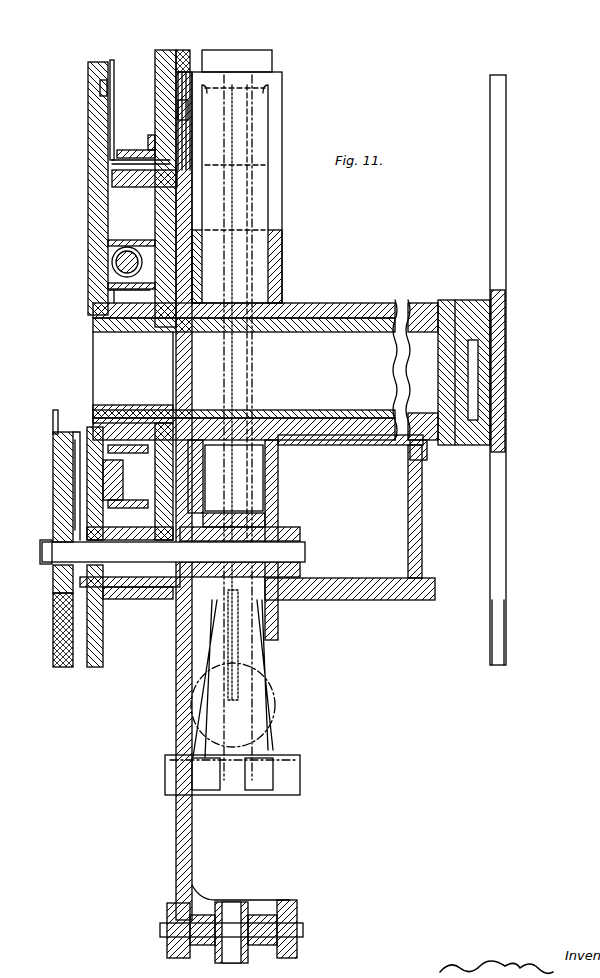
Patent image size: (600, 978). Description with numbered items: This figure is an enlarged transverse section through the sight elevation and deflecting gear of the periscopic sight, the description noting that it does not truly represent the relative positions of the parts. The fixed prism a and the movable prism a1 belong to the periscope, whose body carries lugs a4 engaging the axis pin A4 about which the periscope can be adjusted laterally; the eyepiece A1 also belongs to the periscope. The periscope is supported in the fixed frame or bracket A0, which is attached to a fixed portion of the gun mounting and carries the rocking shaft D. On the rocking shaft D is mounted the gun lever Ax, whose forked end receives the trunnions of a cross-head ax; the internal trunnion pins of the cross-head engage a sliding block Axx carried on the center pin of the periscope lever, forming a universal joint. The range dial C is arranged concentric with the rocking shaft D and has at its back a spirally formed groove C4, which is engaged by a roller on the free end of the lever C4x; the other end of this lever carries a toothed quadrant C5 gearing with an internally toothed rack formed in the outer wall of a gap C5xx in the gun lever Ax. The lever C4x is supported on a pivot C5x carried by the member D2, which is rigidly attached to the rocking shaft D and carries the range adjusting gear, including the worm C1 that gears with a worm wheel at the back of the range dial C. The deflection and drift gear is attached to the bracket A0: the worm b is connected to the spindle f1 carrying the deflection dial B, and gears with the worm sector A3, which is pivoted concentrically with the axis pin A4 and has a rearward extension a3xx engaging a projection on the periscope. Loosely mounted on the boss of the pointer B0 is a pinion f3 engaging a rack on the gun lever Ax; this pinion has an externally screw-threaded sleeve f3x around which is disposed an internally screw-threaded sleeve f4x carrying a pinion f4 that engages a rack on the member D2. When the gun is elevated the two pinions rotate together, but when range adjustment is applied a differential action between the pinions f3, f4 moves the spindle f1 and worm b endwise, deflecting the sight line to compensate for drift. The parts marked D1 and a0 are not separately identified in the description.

The fixed prism a is at (490, 125).
The movable prism a1 is at (492, 636).
The frame block D1 is at (472, 305).
The rocking shaft D is at (265, 380).
The range dial C is at (90, 140).
The lever C4x is at (110, 72).
The spirally formed groove C4 is at (100, 88).
The member D2 is at (165, 130).
The pivot C5x is at (95, 182).
The toothed quadrant C5 is at (183, 76).
The gap C5xx is at (186, 116).
The worm C1 is at (113, 261).
The gun lever Ax is at (186, 224).
The axis pin A4 is at (245, 62).
The lugs a4 is at (255, 132).
The bracket A0 is at (262, 305).
The housing cavity a0 is at (274, 490).
The worm b is at (250, 540).
The pointer B0 is at (55, 412).
The deflection dial B is at (62, 442).
The pinion f4 is at (146, 508).
The internally screw-threaded sleeve f4x is at (57, 596).
The externally screw-threaded sleeve f3x is at (127, 580).
The spindle f1 is at (150, 578).
The pinion f3 is at (170, 625).
The worm sector A3 is at (250, 650).
The eyepiece A1 is at (255, 722).
The rearward extension a3xx is at (290, 775).
The sliding block Axx is at (242, 905).
The cross-head ax is at (292, 905).